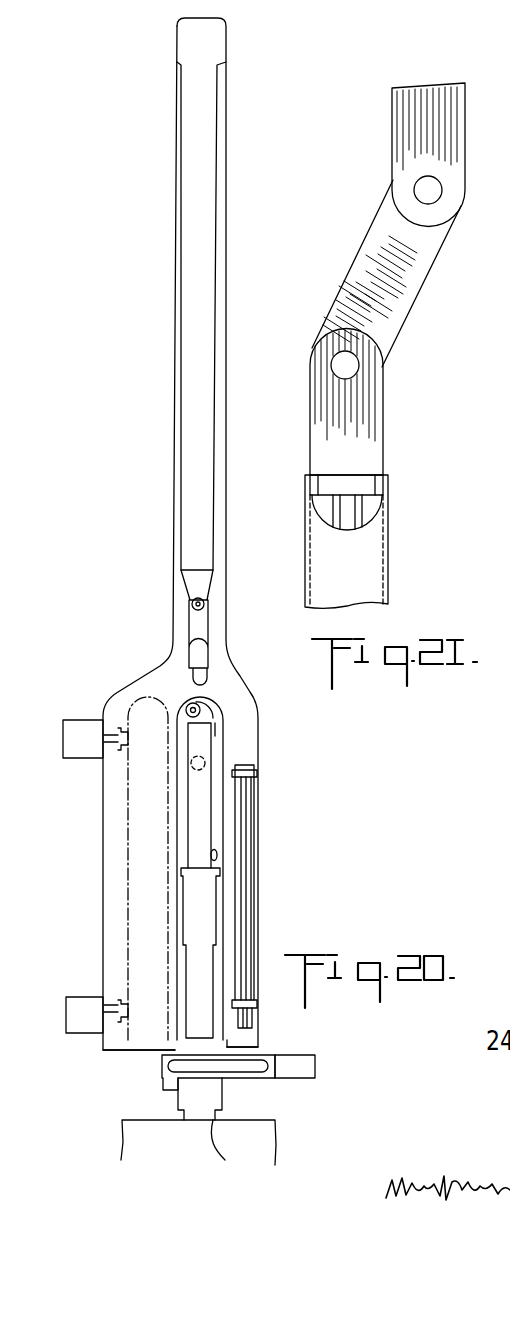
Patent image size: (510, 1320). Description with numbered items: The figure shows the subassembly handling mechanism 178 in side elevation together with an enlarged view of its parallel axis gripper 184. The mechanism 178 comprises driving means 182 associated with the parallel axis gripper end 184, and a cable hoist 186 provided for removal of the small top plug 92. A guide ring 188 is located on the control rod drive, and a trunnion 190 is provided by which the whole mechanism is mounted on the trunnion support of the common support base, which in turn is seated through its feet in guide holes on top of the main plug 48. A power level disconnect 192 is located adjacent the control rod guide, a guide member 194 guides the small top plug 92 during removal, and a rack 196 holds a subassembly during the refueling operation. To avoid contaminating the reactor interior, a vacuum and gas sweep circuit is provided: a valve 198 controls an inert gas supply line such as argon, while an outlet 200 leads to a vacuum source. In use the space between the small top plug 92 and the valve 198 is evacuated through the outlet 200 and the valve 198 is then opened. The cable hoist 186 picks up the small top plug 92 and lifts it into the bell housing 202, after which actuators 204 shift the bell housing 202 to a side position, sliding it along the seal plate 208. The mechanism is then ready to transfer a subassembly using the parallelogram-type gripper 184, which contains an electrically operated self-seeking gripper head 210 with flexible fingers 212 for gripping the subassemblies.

In FIG. 20, the main plug 48 is at (160, 1130).
In FIG. 20, the small top plug 92 is at (225, 1160).
In FIG. 20, the subassembly handling mechanism 178 is at (143, 570).
In FIG. 20, the driving means 182 is at (202, 47).
In FIG. 20, the parallel axis gripper 184 is at (197, 628).
In FIG. 21, the parallel axis gripper 184 is at (424, 325).
In FIG. 20, the cable hoist 186 is at (198, 705).
In FIG. 20, the guide ring 188 is at (224, 720).
In FIG. 20, the trunnion 190 is at (200, 758).
In FIG. 20, the power level disconnect 192 is at (217, 855).
In FIG. 20, the guide member 194 is at (212, 870).
In FIG. 20, the rack 196 is at (245, 935).
In FIG. 20, the valve 198 is at (305, 1057).
In FIG. 20, the outlet 200 is at (162, 1087).
In FIG. 20, the bell housing 202 is at (213, 712).
In FIG. 20, the actuators 204 is at (82, 747).
In FIG. 20, the seal plate 208 is at (120, 1052).
In FIG. 21, the gripper head 210 is at (358, 480).
In FIG. 21, the flexible fingers 212 is at (372, 510).